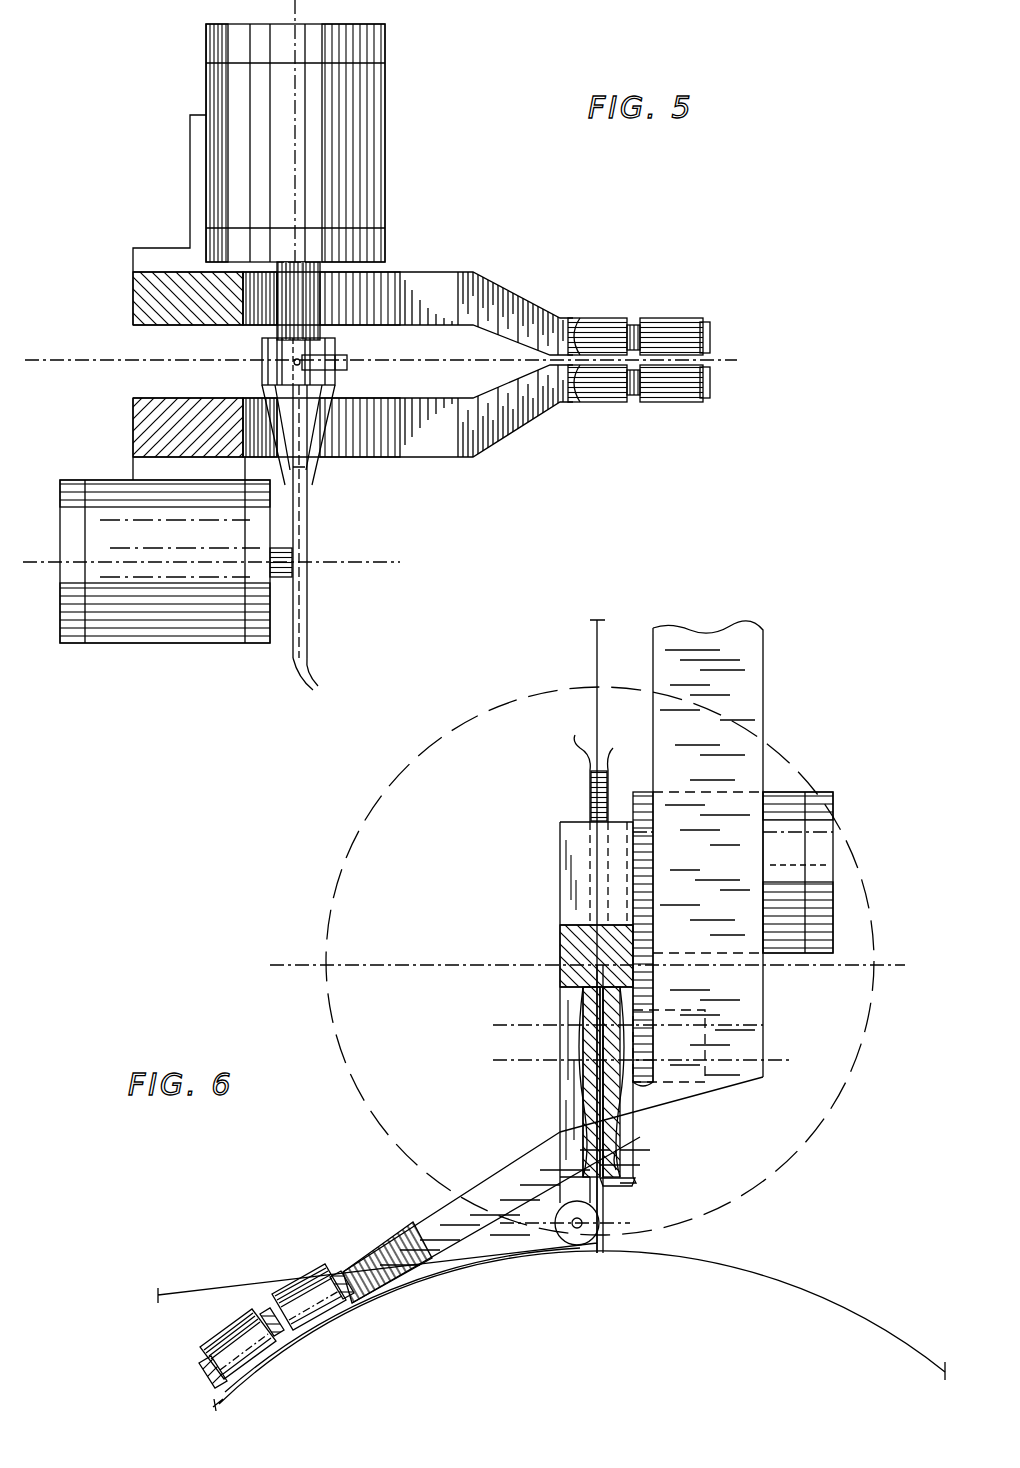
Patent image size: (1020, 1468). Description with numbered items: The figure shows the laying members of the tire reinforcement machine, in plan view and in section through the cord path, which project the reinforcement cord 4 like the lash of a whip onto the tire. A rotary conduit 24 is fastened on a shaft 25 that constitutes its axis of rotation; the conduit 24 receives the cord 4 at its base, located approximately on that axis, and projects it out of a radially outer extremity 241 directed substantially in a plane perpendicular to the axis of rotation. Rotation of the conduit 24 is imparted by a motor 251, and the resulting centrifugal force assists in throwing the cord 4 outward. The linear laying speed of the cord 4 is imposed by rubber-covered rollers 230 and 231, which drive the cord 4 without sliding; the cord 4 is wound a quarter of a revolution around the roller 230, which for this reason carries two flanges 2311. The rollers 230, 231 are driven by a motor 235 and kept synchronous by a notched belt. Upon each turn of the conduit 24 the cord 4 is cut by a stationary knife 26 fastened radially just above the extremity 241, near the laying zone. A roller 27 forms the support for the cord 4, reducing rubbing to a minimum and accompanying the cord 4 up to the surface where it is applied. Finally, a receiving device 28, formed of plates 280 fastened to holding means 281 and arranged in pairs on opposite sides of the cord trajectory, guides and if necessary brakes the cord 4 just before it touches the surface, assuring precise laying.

In FIG. 5, the motor 251 is at (207, 46).
In FIG. 5, the shaft 25 is at (310, 298).
In FIG. 5, the device for receiving the reinforcement cord 28 is at (639, 332).
In FIG. 6, the device for receiving the reinforcement cord 28 is at (247, 1311).
In FIG. 5, the plates 280 is at (672, 322).
In FIG. 6, the plates 280 is at (238, 1322).
In FIG. 5, the rotary conduit 24 is at (270, 351).
In FIG. 6, the rotary conduit 24 is at (655, 1126).
In FIG. 5, the roller 27 is at (350, 358).
In FIG. 6, the roller 27 is at (580, 1246).
In FIG. 5, the radially outer extremity 241 is at (294, 364).
In FIG. 6, the radially outer extremity 241 is at (615, 1166).
In FIG. 5, the roller 230 is at (310, 541).
In FIG. 6, the roller 230 is at (590, 796).
In FIG. 5, the flanges 2311 is at (308, 682).
In FIG. 6, the flanges 2311 is at (586, 757).
In FIG. 5, the motor 235 is at (100, 628).
In FIG. 6, the motor 235 is at (810, 802).
In FIG. 6, the roller 231 is at (562, 996).
In FIG. 6, the stationary knife 26 is at (626, 1188).
In FIG. 6, the holding means 281 is at (207, 1373).
In FIG. 6, the reinforcement cord 4 is at (597, 650).